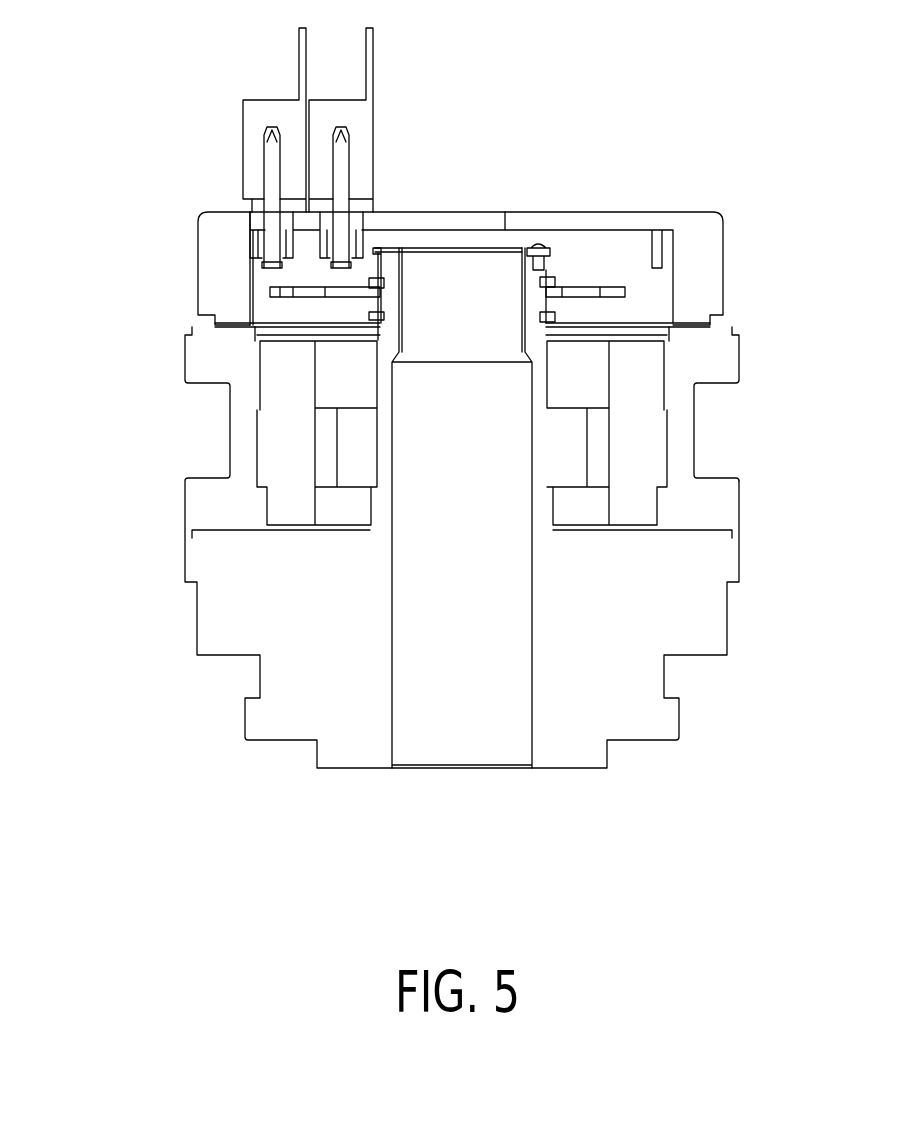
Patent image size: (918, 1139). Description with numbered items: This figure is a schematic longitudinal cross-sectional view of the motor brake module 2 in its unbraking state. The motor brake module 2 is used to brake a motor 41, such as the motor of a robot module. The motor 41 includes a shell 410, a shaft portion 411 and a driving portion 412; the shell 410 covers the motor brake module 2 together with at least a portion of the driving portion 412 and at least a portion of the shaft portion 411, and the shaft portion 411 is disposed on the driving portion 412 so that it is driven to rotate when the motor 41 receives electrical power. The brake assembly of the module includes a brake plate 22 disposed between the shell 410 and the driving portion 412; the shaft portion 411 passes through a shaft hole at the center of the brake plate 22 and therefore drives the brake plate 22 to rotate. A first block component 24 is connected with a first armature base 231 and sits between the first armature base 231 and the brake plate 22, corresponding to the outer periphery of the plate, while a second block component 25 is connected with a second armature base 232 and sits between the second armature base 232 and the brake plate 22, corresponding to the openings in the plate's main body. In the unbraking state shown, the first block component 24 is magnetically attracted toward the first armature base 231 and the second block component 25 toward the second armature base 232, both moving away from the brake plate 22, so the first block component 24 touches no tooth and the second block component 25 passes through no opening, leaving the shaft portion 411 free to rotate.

The motor brake module 2 is at (335, 184).
The brake plate 22 is at (270, 292).
The first armature base 231 is at (253, 115).
The second armature base 232 is at (364, 117).
The first block component 24 is at (277, 175).
The second block component 25 is at (342, 173).
The motor 41 is at (438, 538).
The shell 410 is at (697, 275).
The shaft portion 411 is at (453, 730).
The driving portion 412 is at (695, 630).